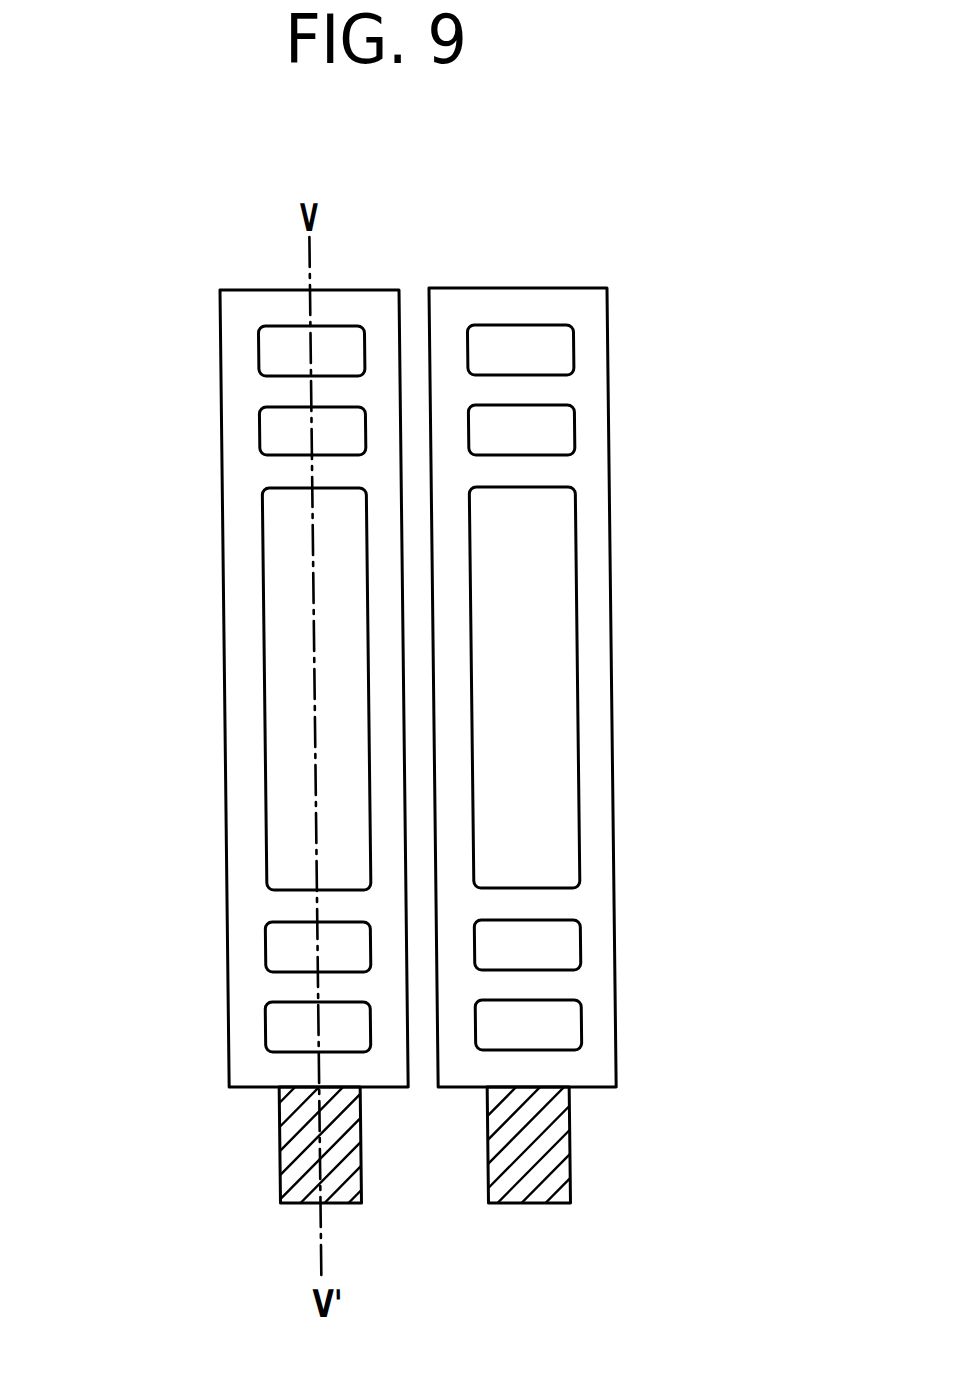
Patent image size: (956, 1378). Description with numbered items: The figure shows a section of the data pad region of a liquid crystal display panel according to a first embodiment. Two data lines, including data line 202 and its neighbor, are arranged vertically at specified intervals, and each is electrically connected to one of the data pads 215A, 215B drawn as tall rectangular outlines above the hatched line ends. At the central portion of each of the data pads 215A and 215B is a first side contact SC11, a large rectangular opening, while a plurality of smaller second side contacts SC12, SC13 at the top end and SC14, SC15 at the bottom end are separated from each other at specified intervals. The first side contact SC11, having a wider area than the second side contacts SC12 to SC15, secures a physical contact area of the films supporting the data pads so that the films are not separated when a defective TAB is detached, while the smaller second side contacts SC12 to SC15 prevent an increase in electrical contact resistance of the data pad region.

The data pad 215A is at (224, 783).
The data pad 215B is at (616, 780).
The first side contact SC11 is at (283, 653).
The second side contact SC12 is at (282, 357).
The second side contact SC13 is at (282, 438).
The second side contact SC14 is at (287, 956).
The second side contact SC15 is at (287, 1031).
The data line 202 is at (294, 1141).